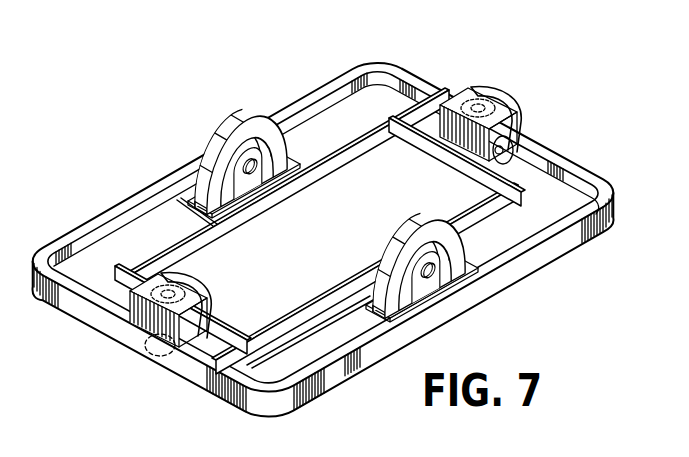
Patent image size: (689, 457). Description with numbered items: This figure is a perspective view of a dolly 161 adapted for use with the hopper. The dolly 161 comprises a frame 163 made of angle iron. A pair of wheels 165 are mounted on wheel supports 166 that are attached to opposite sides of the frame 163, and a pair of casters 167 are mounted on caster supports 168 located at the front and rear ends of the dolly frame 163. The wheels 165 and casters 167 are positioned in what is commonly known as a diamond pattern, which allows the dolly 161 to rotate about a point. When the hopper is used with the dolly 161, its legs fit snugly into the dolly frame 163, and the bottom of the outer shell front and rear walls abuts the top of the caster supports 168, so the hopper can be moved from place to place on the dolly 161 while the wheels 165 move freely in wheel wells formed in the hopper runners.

The dolly 161 is at (603, 253).
The frame 163 is at (553, 250).
The wheels 165 is at (240, 119).
The wheel supports 166 is at (276, 158).
The casters 167 is at (519, 140).
The caster supports 168 is at (459, 138).